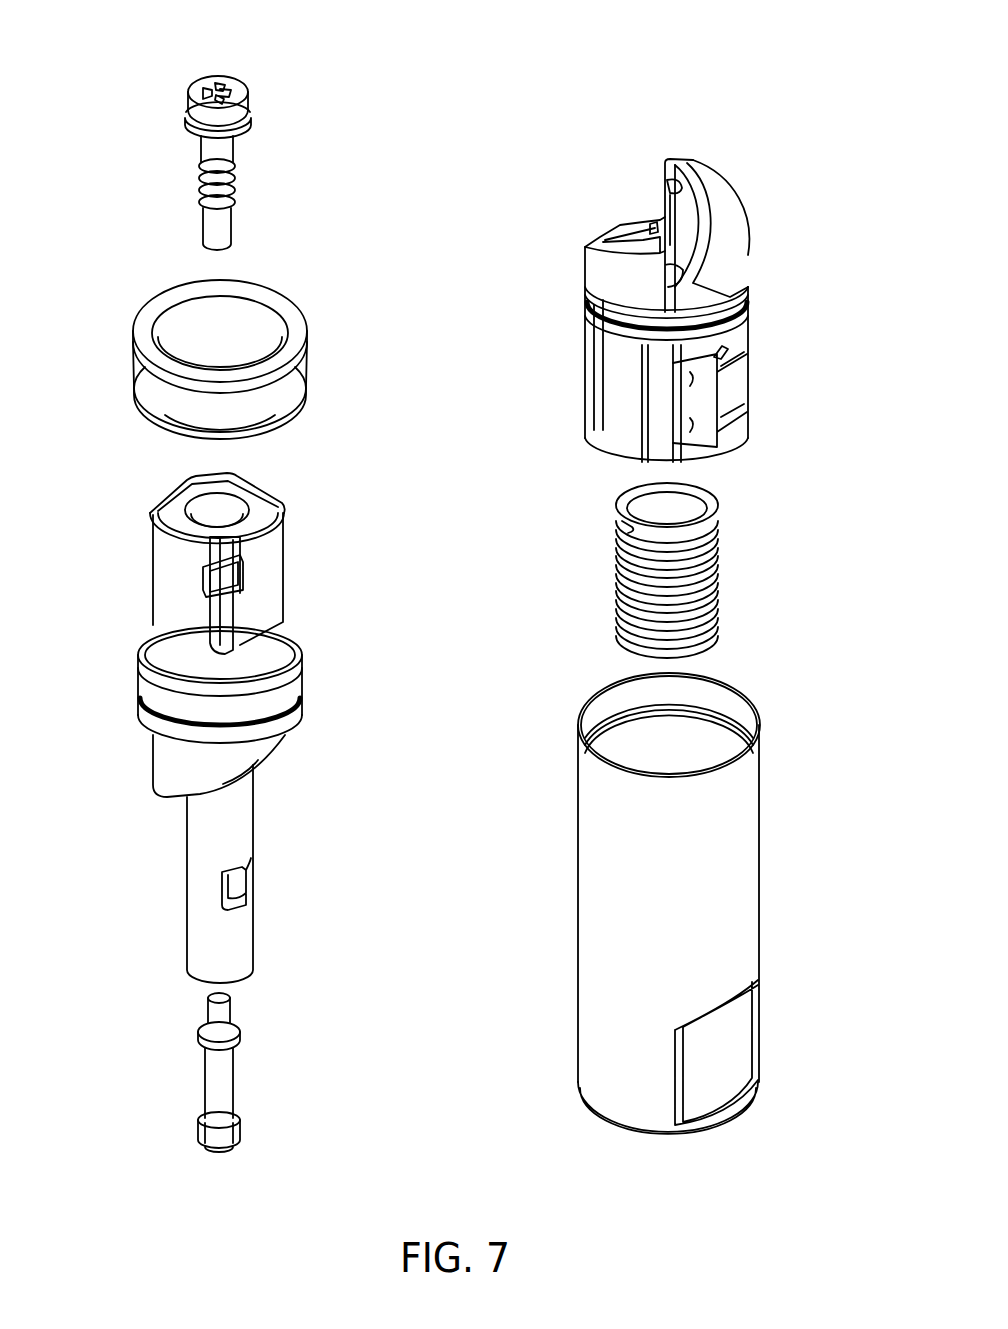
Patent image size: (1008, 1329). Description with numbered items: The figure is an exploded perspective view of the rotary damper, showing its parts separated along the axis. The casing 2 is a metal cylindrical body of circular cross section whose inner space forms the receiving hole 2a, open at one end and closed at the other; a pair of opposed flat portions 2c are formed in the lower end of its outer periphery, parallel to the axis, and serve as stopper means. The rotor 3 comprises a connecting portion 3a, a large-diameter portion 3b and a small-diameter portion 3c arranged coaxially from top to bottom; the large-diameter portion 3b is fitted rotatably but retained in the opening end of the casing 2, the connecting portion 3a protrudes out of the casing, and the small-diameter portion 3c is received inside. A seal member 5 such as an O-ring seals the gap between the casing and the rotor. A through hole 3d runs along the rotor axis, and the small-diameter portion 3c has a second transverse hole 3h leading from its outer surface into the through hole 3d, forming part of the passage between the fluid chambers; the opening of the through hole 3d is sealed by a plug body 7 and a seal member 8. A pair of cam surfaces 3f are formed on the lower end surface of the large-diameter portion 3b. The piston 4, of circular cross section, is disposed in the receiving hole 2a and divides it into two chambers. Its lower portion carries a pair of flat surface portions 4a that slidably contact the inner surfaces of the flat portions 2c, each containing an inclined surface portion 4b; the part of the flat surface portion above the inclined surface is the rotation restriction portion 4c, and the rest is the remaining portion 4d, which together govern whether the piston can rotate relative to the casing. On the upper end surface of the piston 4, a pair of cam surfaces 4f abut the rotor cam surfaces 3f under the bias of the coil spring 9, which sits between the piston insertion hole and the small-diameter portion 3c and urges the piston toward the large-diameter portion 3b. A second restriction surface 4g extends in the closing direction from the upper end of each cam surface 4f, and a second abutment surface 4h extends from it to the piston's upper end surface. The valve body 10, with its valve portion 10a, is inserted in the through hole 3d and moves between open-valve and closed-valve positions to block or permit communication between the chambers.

The casing 2 is at (763, 889).
The receiving hole 2a is at (716, 745).
The flat portion 2c is at (725, 1052).
The rotor 3 is at (130, 658).
The connecting portion 3a is at (290, 562).
The large-diameter portion 3b is at (303, 665).
The small-diameter portion 3c is at (256, 835).
The through hole 3d is at (225, 510).
The cam surface 3f is at (232, 785).
The second transverse hole 3h is at (238, 890).
The piston 4 is at (752, 248).
The flat surface portion 4a is at (515, 362).
The inclined surface portion 4b is at (740, 395).
The rotation restriction portion 4c is at (690, 378).
The remaining portion 4d is at (690, 428).
The cam surface 4f is at (598, 243).
The second restriction surface 4g is at (683, 170).
The second abutment surface 4h is at (667, 182).
The seal member 5 is at (133, 400).
The plug body 7 is at (216, 76).
The seal member 8 is at (251, 118).
The coil spring 9 is at (720, 580).
The valve body 10 is at (235, 1085).
The valve portion 10a is at (244, 1032).